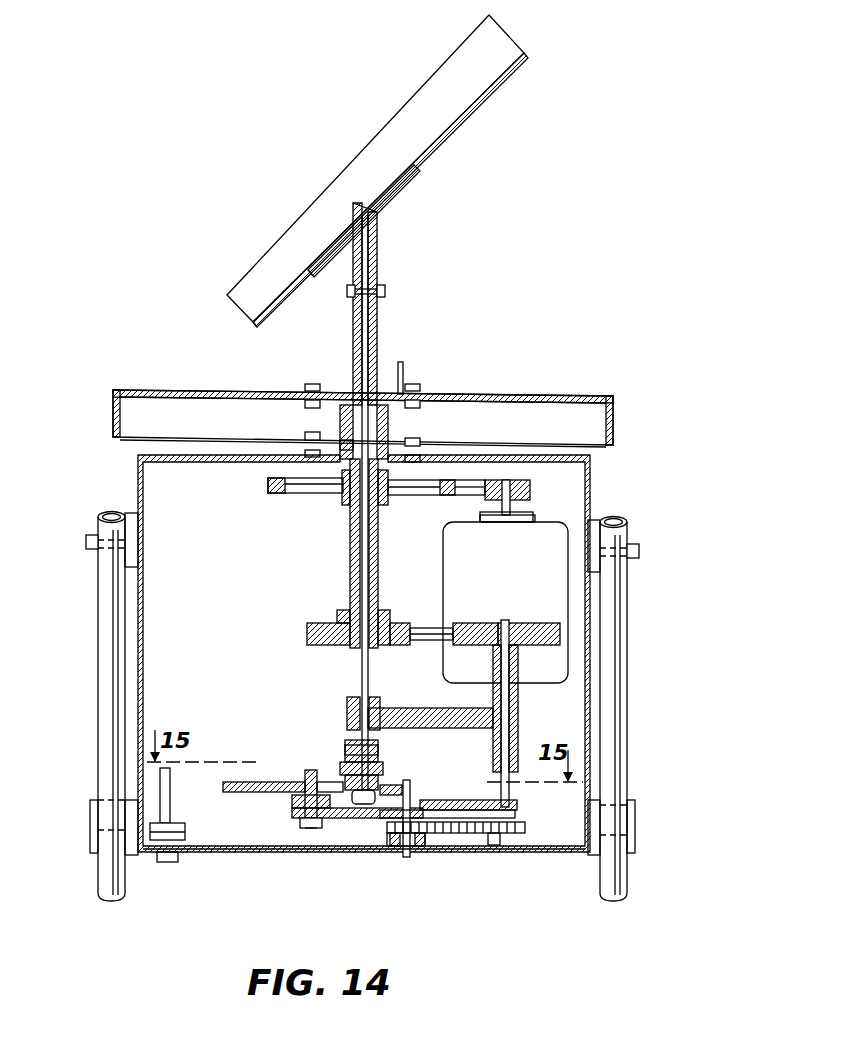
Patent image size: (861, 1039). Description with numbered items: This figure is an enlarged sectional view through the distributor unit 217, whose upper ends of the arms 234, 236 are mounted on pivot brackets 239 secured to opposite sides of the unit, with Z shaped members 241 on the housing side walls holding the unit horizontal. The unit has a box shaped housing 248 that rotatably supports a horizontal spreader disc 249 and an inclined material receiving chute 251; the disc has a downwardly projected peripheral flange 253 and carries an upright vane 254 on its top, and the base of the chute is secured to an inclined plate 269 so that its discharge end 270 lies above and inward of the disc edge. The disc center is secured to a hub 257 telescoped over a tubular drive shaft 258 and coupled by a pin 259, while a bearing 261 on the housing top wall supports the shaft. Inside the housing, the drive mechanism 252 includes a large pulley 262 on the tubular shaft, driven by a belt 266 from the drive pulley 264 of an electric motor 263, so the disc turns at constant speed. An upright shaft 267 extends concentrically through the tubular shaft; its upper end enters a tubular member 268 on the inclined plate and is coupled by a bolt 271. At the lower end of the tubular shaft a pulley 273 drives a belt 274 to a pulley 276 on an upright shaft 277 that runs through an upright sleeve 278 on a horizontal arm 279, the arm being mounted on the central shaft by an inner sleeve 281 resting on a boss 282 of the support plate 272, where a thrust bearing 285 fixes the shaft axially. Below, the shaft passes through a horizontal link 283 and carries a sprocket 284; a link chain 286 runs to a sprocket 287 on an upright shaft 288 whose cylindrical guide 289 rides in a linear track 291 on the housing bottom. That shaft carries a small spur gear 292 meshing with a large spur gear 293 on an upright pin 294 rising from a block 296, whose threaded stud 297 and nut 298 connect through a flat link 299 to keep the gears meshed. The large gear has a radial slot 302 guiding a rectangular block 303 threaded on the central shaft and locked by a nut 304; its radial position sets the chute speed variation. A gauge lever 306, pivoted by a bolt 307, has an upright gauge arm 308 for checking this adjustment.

The distributor unit 217 is at (136, 368).
The material receiving chute 251 is at (447, 78).
The inclined plate 269 is at (406, 177).
The discharge end of the chute 270 is at (256, 320).
The tubular member 268 is at (353, 331).
The bolt 271 is at (347, 292).
The peripheral flange 253 is at (613, 418).
The spreader disc 249 is at (548, 394).
The upright vane 254 is at (404, 366).
The hub 257 is at (340, 414).
The pin 259 is at (388, 425).
The bearing 261 is at (330, 448).
The drive mechanism 252 is at (285, 674).
The large pulley 262 is at (277, 494).
The belt 266 is at (470, 500).
The drive pulley 264 is at (530, 488).
The electric motor 263 is at (505, 597).
The tubular drive shaft 258 is at (350, 562).
The upright shaft 267 is at (362, 681).
The pulley 273 is at (332, 620).
The belt 274 is at (424, 628).
The pulley 276 is at (470, 623).
The upright shaft 277 is at (507, 622).
The upright sleeve 278 is at (518, 706).
The horizontal arm 279 is at (470, 712).
The inner sleeve 281 is at (378, 700).
The thrust bearing 285 is at (346, 745).
The boss 282 is at (378, 757).
The support plate 272 is at (383, 768).
The nut 304 is at (360, 806).
The rectangular block 303 is at (340, 806).
The large spur gear 293 is at (257, 782).
The upright pin 294 is at (306, 775).
The radial slot 302 is at (335, 782).
The block 296 is at (292, 802).
The flat link 299 is at (292, 812).
The threaded stud 297 is at (312, 830).
The nut 298 is at (310, 826).
The small spur gear 292 is at (412, 786).
The horizontal link 283 is at (450, 800).
The upright shaft 288 is at (400, 803).
The link chain 286 is at (452, 836).
The linear track 291 is at (425, 840).
The sprocket 287 is at (393, 836).
The cylindrical guide 289 is at (405, 850).
The sprocket 284 is at (496, 834).
The box shaped housing 248 is at (562, 852).
The gauge arm 308 is at (170, 786).
The lever 306 is at (180, 824).
The bolt 307 is at (170, 862).
The arm 234 is at (98, 682).
The arm 236 is at (627, 612).
The pivot bracket 239 is at (86, 544).
The Z shaped member 241 is at (90, 803).